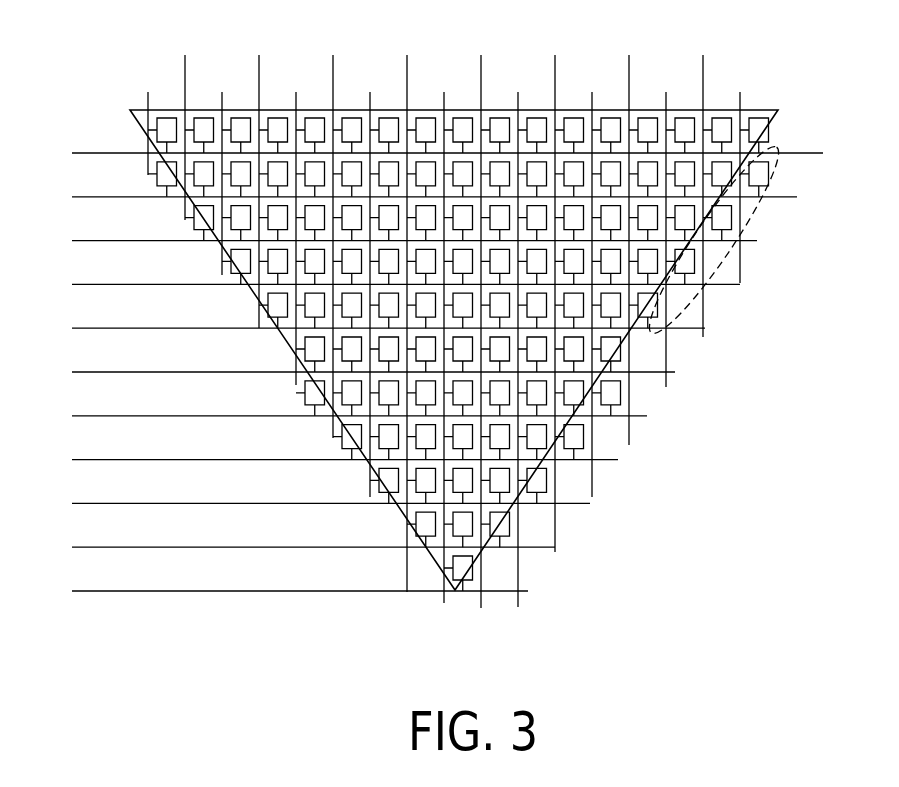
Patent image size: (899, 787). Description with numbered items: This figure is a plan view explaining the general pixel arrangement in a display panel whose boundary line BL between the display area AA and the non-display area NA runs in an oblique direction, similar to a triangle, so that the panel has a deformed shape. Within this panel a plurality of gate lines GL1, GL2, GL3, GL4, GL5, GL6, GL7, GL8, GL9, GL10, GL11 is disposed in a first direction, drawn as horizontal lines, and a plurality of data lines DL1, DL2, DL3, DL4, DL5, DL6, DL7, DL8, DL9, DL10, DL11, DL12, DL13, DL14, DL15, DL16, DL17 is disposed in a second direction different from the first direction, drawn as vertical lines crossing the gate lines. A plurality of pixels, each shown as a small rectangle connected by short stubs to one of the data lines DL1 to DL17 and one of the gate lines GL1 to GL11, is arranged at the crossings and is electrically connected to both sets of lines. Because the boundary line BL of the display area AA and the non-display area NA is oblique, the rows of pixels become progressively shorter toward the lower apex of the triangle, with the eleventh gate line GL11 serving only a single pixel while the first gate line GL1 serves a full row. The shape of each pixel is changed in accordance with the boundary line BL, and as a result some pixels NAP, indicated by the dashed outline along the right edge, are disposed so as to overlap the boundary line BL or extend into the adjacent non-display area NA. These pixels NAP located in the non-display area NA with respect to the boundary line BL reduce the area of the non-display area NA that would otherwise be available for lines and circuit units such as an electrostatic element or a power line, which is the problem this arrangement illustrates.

The data line DL1 is at (147, 120).
The data line DL2 is at (184, 124).
The data line DL3 is at (221, 170).
The data line DL4 is at (258, 178).
The data line DL5 is at (295, 225).
The data line DL6 is at (332, 233).
The data line DL7 is at (369, 281).
The data line DL8 is at (406, 310).
The data line DL9 is at (443, 334).
The data line DL10 is at (481, 318).
The data line DL11 is at (518, 336).
The data line DL12 is at (555, 290).
The data line DL13 is at (592, 281).
The data line DL14 is at (629, 237).
The data line DL15 is at (666, 226).
The data line DL16 is at (703, 183).
The data line DL17 is at (740, 174).
The gate line GL1 is at (426, 155).
The gate line GL2 is at (413, 199).
The gate line GL3 is at (393, 243).
The gate line GL4 is at (384, 286).
The gate line GL5 is at (367, 330).
The gate line GL6 is at (352, 374).
The gate line GL7 is at (338, 418).
The gate line GL8 is at (323, 462).
The gate line GL9 is at (309, 505).
The gate line GL10 is at (285, 549).
The gate line GL11 is at (272, 593).
The boundary line BL is at (778, 110).
The display area AA is at (550, 421).
The non-display area NA is at (643, 393).
The pixels disposed in the non-display area NAP is at (748, 223).